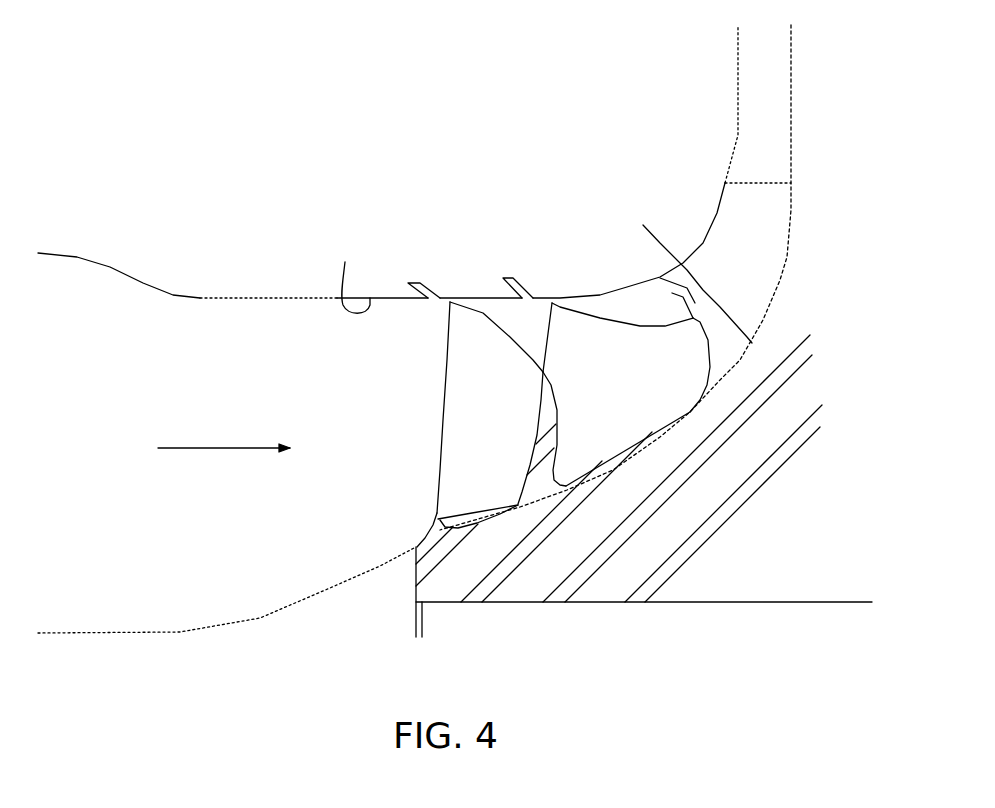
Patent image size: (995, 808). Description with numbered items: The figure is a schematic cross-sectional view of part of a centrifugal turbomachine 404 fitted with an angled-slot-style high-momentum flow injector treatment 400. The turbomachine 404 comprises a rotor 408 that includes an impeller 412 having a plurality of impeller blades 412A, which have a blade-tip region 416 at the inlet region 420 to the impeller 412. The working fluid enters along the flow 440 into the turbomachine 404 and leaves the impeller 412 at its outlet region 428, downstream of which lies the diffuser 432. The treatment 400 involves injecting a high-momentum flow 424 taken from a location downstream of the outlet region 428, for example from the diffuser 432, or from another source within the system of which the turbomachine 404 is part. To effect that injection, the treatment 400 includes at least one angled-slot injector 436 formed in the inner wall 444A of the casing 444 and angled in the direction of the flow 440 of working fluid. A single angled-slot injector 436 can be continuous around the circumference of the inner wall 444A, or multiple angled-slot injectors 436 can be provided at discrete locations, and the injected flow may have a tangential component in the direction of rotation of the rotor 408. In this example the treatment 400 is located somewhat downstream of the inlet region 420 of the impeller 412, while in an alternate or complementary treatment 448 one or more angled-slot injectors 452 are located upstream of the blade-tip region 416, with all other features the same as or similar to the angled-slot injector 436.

The angled-slot-style high-momentum flow injector treatment 400 is at (462, 200).
The centrifugal turbomachine 404 is at (175, 222).
The rotor 408 is at (527, 569).
The impeller 412 is at (645, 457).
The impeller blades 412A is at (450, 425).
The blade-tip region 416 is at (438, 311).
The inlet region 420 is at (407, 392).
The high-momentum flow 424 is at (502, 275).
The outlet region 428 is at (759, 181).
The diffuser 432 is at (797, 80).
The angled-slot injector 436 is at (522, 285).
The flow of working fluid 440 is at (215, 447).
The casing 444 is at (205, 297).
The inner wall 444A is at (351, 273).
The alternate or complementary treatment 448 is at (397, 250).
The angled-slot injectors 452 is at (429, 283).